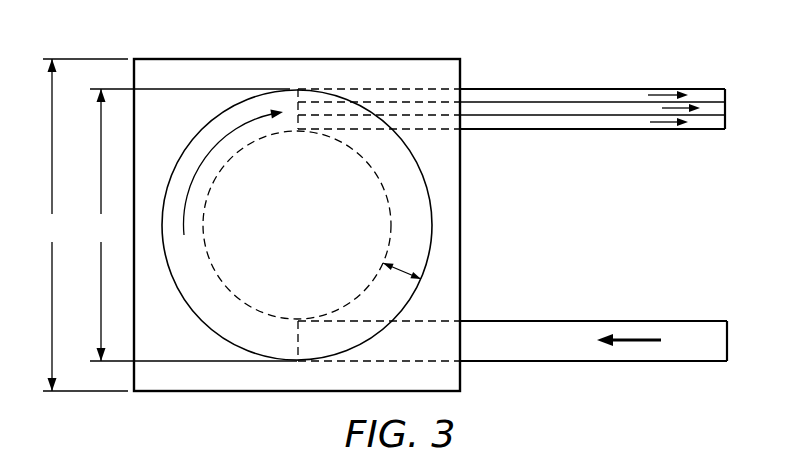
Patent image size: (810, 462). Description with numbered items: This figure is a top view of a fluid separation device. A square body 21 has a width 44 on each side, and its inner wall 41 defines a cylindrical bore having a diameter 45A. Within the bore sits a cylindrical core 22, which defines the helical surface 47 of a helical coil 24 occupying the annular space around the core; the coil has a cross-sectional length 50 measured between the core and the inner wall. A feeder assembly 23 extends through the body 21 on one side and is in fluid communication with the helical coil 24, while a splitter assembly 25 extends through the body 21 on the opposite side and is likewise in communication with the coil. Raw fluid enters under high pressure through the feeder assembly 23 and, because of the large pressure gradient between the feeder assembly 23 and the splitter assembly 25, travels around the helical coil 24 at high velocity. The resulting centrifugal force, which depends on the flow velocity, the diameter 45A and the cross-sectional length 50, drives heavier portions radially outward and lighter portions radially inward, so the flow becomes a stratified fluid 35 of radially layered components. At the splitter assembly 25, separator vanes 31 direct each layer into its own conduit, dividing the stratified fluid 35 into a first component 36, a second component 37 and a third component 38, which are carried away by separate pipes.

The body 21 is at (165, 65).
The cylindrical core 22 is at (283, 237).
The feeder assembly 23 is at (594, 321).
The helical coil 24 is at (200, 298).
The splitter assembly 25 is at (567, 88).
The separator vanes 31 is at (518, 115).
The stratified fluid 35 is at (217, 144).
The first component 36 is at (664, 95).
The second component 37 is at (696, 111).
The third component 38 is at (662, 123).
The inner wall 41 is at (630, 342).
The width 44 is at (83, 225).
The diameter 45A is at (107, 225).
The helical surface 47 is at (256, 309).
The cross-sectional length 50 is at (398, 272).